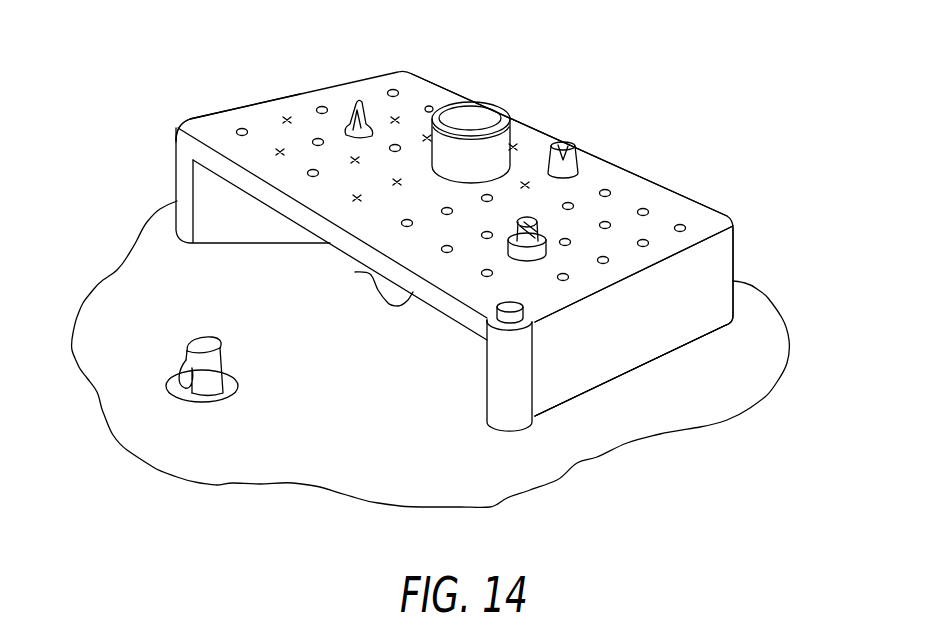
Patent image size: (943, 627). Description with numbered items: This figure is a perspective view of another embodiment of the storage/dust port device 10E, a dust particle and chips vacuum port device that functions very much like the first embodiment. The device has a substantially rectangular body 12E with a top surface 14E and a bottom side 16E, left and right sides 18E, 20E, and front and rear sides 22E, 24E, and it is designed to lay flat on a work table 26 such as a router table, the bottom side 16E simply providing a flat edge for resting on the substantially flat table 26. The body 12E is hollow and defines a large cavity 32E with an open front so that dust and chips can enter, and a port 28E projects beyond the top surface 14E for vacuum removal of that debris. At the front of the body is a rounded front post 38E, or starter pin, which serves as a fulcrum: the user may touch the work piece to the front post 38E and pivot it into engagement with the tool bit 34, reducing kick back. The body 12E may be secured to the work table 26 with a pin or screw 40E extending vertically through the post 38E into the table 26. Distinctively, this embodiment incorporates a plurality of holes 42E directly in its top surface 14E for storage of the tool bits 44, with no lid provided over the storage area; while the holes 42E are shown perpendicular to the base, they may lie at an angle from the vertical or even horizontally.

The storage/dust port device 10E is at (683, 91).
The body 12E is at (697, 272).
The top surface 14E is at (415, 209).
The bottom side 16E is at (672, 353).
The left side 18E is at (200, 112).
The right side 20E is at (642, 346).
The front side 22E is at (184, 168).
The rear side 24E is at (638, 178).
The work table 26 is at (307, 437).
The port 28E is at (512, 130).
The cavity 32E is at (354, 282).
The tool bit 34 is at (188, 387).
The front post 38E is at (493, 407).
The pin or screw 40E is at (510, 322).
The holes 42E is at (243, 128).
The tool bits 44 is at (370, 110).